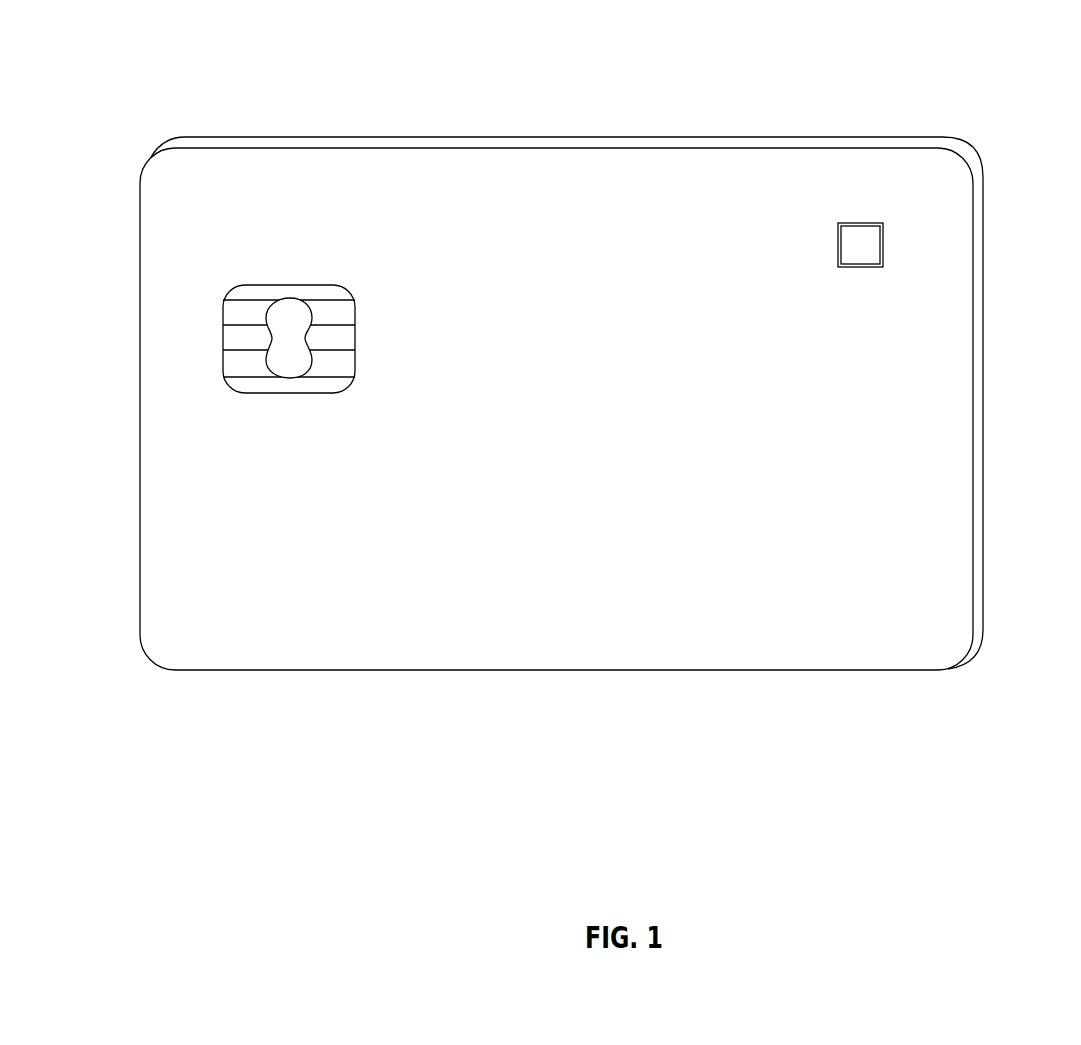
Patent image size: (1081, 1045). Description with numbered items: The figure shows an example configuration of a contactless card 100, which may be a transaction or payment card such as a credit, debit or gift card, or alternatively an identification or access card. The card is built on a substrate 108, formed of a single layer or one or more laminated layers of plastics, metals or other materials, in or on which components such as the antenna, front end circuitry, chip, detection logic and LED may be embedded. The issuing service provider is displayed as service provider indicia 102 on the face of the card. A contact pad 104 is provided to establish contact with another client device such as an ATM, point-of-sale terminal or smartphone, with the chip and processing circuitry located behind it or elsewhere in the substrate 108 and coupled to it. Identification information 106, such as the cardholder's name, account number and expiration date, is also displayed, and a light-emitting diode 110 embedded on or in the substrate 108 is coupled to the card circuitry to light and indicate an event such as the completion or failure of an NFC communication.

The contactless card 100 is at (885, 98).
The service provider indicia 102 is at (703, 175).
The contact pad 104 is at (288, 284).
The identification information 106 is at (195, 536).
The substrate 108 is at (945, 308).
The light-emitting diode 110 is at (863, 267).